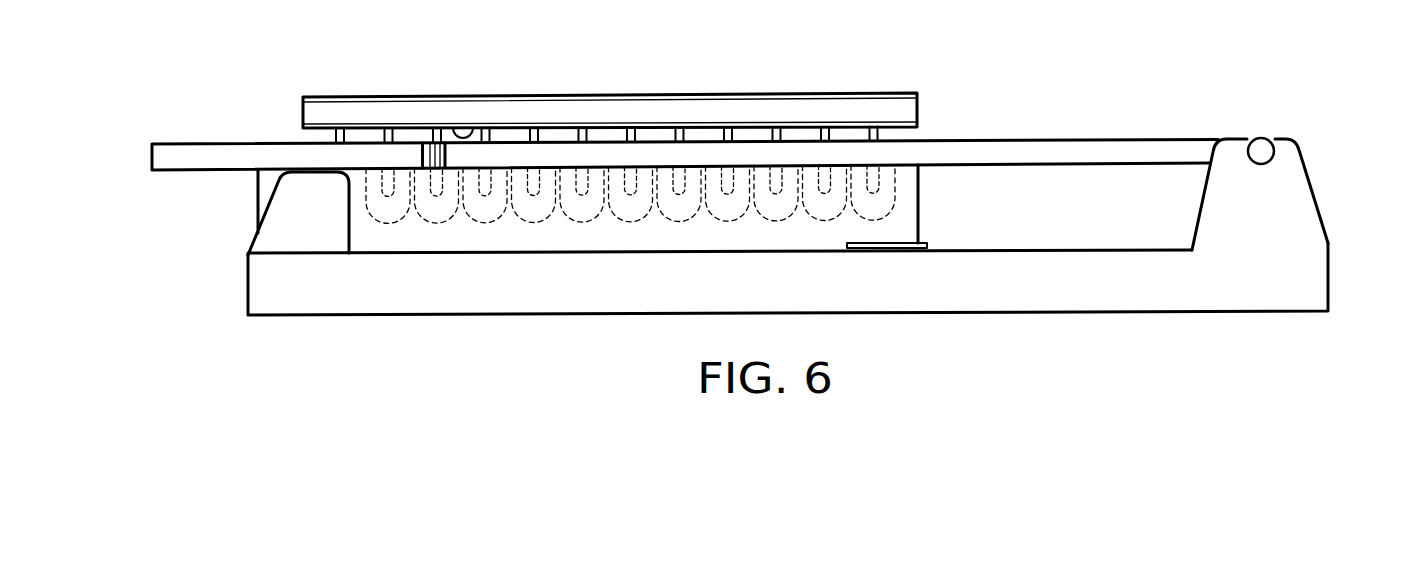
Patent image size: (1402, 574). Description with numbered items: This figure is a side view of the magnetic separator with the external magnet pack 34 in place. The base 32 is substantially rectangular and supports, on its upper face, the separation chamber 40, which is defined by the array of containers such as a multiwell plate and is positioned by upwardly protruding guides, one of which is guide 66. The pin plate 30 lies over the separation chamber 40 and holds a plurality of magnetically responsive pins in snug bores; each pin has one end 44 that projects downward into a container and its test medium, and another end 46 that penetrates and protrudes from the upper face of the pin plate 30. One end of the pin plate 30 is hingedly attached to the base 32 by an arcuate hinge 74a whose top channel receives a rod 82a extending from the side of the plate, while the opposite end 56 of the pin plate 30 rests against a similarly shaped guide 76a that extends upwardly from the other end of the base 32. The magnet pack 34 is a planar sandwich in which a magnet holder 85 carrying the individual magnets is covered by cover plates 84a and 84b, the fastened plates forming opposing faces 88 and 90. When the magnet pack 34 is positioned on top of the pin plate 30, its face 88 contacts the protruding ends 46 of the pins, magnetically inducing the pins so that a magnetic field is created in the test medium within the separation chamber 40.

The pin plate 30 is at (1097, 148).
The base 32 is at (522, 298).
The magnet pack 34 is at (648, 65).
The separation chamber 40 is at (378, 240).
The pin end 44 is at (792, 202).
The pin end 46 is at (337, 138).
The end of pin plate 56 is at (152, 157).
The guide 66 is at (893, 255).
The hinge 74a is at (1283, 217).
The guide 76a is at (285, 226).
The rod 82a is at (1257, 139).
The cover plate 84a is at (743, 97).
The cover plate 84b is at (566, 125).
The magnet holder 85 is at (338, 112).
The face of magnet pack 88 is at (452, 128).
The face of magnet pack 90 is at (477, 97).